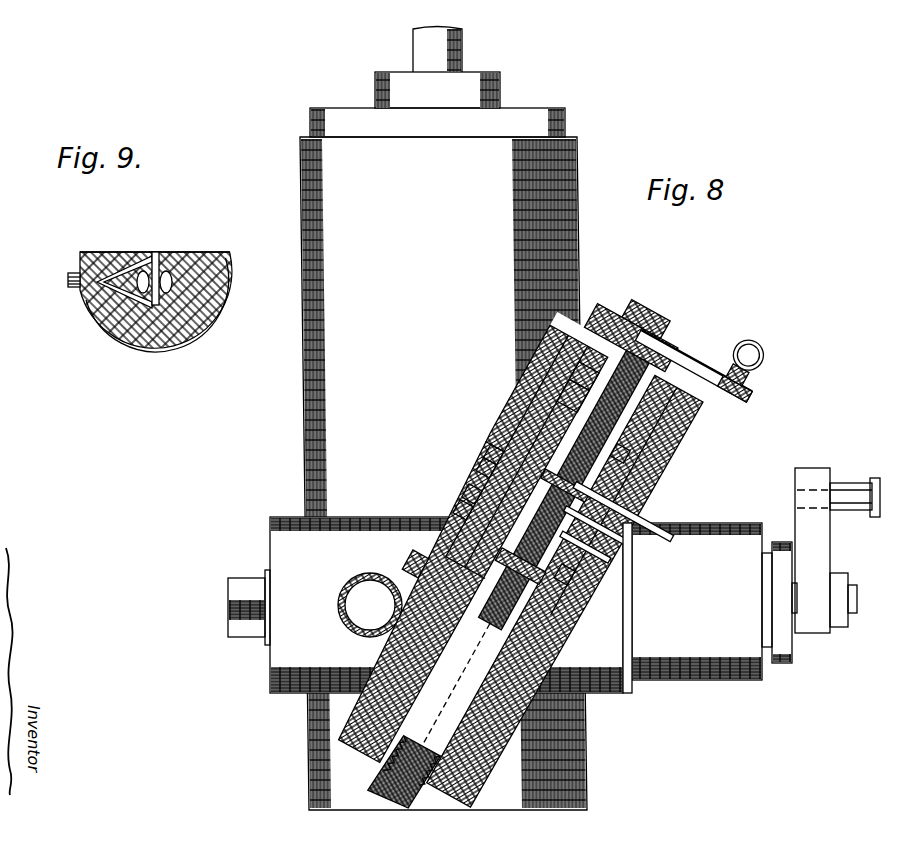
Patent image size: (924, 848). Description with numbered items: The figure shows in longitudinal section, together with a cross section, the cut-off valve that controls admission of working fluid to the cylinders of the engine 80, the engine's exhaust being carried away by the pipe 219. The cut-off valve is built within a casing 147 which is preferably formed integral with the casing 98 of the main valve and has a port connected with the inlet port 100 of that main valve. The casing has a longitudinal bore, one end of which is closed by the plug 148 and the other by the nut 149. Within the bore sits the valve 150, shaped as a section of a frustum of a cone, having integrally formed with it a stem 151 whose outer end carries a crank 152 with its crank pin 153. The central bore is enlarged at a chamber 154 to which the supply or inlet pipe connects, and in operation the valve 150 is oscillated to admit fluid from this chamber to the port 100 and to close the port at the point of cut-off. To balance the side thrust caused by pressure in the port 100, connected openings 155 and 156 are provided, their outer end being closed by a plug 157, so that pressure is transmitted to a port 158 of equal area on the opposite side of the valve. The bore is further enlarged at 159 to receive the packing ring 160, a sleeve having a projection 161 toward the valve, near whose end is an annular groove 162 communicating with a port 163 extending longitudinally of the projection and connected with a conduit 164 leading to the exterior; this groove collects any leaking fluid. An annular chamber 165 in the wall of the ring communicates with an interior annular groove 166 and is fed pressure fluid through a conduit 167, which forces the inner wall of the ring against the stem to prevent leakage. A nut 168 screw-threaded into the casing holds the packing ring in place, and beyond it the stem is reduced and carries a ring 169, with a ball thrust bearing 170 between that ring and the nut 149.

In FIG. 8, the engine 80 is at (443, 419).
In FIG. 8, the casing 98 is at (577, 650).
In FIG. 8, the pipe 219 is at (347, 583).
In FIG. 8, the chamber 154 is at (420, 703).
In FIG. 8, the stem 151 is at (610, 463).
In FIG. 8, the plug 148 is at (380, 770).
In FIG. 8, the valve 150 is at (530, 551).
In FIG. 9, the valve 150 is at (167, 288).
In FIG. 8, the nut 149 is at (603, 327).
In FIG. 8, the crank 152 is at (687, 353).
In FIG. 8, the crank pin 153 is at (765, 347).
In FIG. 8, the ball thrust bearing 170 is at (580, 373).
In FIG. 8, the ring 169 is at (570, 400).
In FIG. 8, the nut 168 is at (620, 452).
In FIG. 8, the annular chamber 165 is at (452, 442).
In FIG. 8, the enlarged bore 159 is at (495, 457).
In FIG. 8, the packing ring 160 is at (493, 465).
In FIG. 8, the casing 147 is at (470, 495).
In FIG. 8, the projection 161 is at (463, 510).
In FIG. 8, the annular groove 162 is at (507, 557).
In FIG. 8, the port 163 is at (565, 575).
In FIG. 8, the conduit 167 is at (643, 523).
In FIG. 8, the annular groove 166 is at (618, 538).
In FIG. 8, the conduit 164 is at (613, 563).
In FIG. 8, the plug 157 is at (422, 567).
In FIG. 9, the plug 157 is at (68, 279).
In FIG. 9, the port 158 is at (217, 317).
In FIG. 9, the opening 155 is at (100, 250).
In FIG. 9, the opening 156 is at (120, 287).
In FIG. 9, the inlet port 100 is at (153, 253).